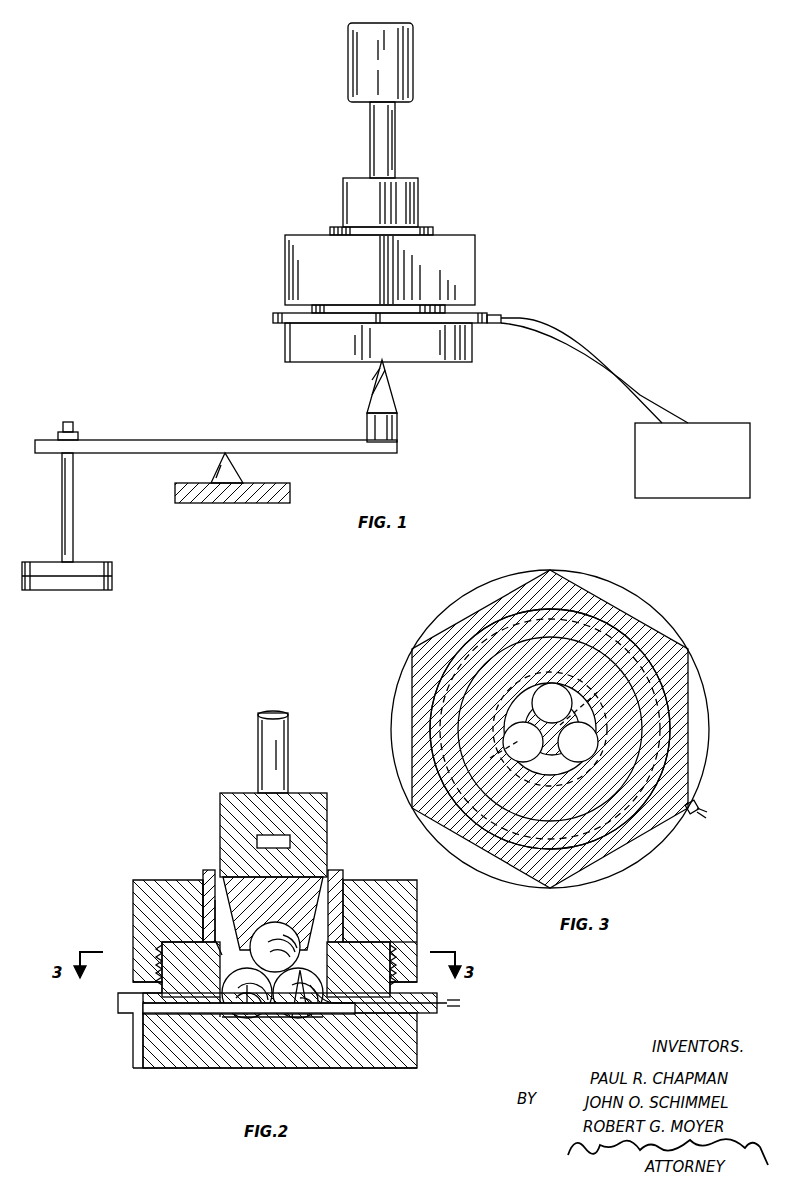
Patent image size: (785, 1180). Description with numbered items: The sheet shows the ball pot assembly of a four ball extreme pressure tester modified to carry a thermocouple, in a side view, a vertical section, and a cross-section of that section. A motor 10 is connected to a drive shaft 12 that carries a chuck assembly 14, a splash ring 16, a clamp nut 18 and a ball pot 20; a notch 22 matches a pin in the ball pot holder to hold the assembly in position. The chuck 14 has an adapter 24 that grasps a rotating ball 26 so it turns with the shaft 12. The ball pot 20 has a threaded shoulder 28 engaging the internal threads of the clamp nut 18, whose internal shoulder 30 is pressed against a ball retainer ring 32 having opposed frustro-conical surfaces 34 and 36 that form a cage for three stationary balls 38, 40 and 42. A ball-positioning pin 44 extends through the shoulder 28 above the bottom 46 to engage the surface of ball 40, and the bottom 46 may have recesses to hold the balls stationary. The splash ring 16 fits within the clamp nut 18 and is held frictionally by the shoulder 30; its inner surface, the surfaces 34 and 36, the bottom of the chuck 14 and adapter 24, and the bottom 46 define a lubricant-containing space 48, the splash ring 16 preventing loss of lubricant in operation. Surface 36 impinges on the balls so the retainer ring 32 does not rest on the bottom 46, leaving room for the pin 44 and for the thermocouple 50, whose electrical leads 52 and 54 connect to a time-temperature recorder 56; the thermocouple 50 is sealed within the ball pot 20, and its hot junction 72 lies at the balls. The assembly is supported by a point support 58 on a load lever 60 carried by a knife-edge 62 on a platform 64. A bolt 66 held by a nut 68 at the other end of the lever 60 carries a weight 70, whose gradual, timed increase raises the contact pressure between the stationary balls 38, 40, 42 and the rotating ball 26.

In FIG. 1, the motor 10 is at (410, 50).
In FIG. 1, the drive shaft 12 is at (394, 132).
In FIG. 2, the drive shaft 12 is at (288, 745).
In FIG. 1, the chuck assembly 14 is at (418, 186).
In FIG. 2, the chuck assembly 14 is at (327, 822).
In FIG. 1, the splash ring 16 is at (433, 231).
In FIG. 2, the splash ring 16 is at (343, 878).
In FIG. 1, the clamp nut 18 is at (475, 255).
In FIG. 2, the clamp nut 18 is at (417, 930).
In FIG. 3, the clamp nut 18 is at (560, 668).
In FIG. 1, the ball pot 20 is at (475, 342).
In FIG. 2, the ball pot 20 is at (417, 1048).
In FIG. 3, the ball pot 20 is at (704, 700).
In FIG. 1, the notch 22 is at (290, 340).
In FIG. 2, the notch 22 is at (140, 1027).
In FIG. 3, the notch 22 is at (436, 805).
In FIG. 2, the adapter 24 is at (267, 893).
In FIG. 2, the rotating ball 26 is at (285, 920).
In FIG. 3, the rotating ball 26 is at (575, 700).
In FIG. 2, the threaded shoulder 28 is at (158, 962).
In FIG. 2, the internal shoulder 30 is at (213, 937).
In FIG. 2, the ball retainer ring 32 is at (200, 955).
In FIG. 3, the ball retainer ring 32 is at (600, 708).
In FIG. 2, the frustro-conical surface 34 is at (203, 915).
In FIG. 2, the frustro-conical surface 36 is at (232, 1030).
In FIG. 2, the stationary ball 38 is at (250, 1018).
In FIG. 3, the stationary ball 38 is at (518, 715).
In FIG. 2, the stationary ball 40 is at (306, 1018).
In FIG. 3, the stationary ball 40 is at (546, 778).
In FIG. 3, the stationary ball 42 is at (600, 690).
In FIG. 2, the ball-positioning pin 44 is at (222, 1012).
In FIG. 3, the ball-positioning pin 44 is at (490, 758).
In FIG. 2, the bottom 46 is at (358, 1035).
In FIG. 2, the lubricant-containing space 48 is at (400, 900).
In FIG. 1, the thermocouple 50 is at (494, 315).
In FIG. 2, the thermocouple 50 is at (440, 1008).
In FIG. 3, the thermocouple 50 is at (696, 803).
In FIG. 1, the electrical lead 52 is at (626, 390).
In FIG. 2, the electrical lead 52 is at (460, 1000).
In FIG. 3, the electrical lead 52 is at (704, 815).
In FIG. 1, the electrical lead 54 is at (636, 375).
In FIG. 2, the electrical lead 54 is at (458, 1006).
In FIG. 3, the electrical lead 54 is at (706, 818).
In FIG. 1, the time-temperature recorder 56 is at (718, 498).
In FIG. 1, the point support 58 is at (397, 410).
In FIG. 1, the load lever 60 is at (382, 453).
In FIG. 1, the knife-edge 62 is at (233, 468).
In FIG. 1, the platform 64 is at (255, 503).
In FIG. 1, the bolt 66 is at (73, 480).
In FIG. 1, the nut 68 is at (75, 430).
In FIG. 1, the weight 70 is at (112, 572).
In FIG. 2, the hot junction 72 is at (298, 1020).
In FIG. 3, the hot junction 72 is at (578, 742).